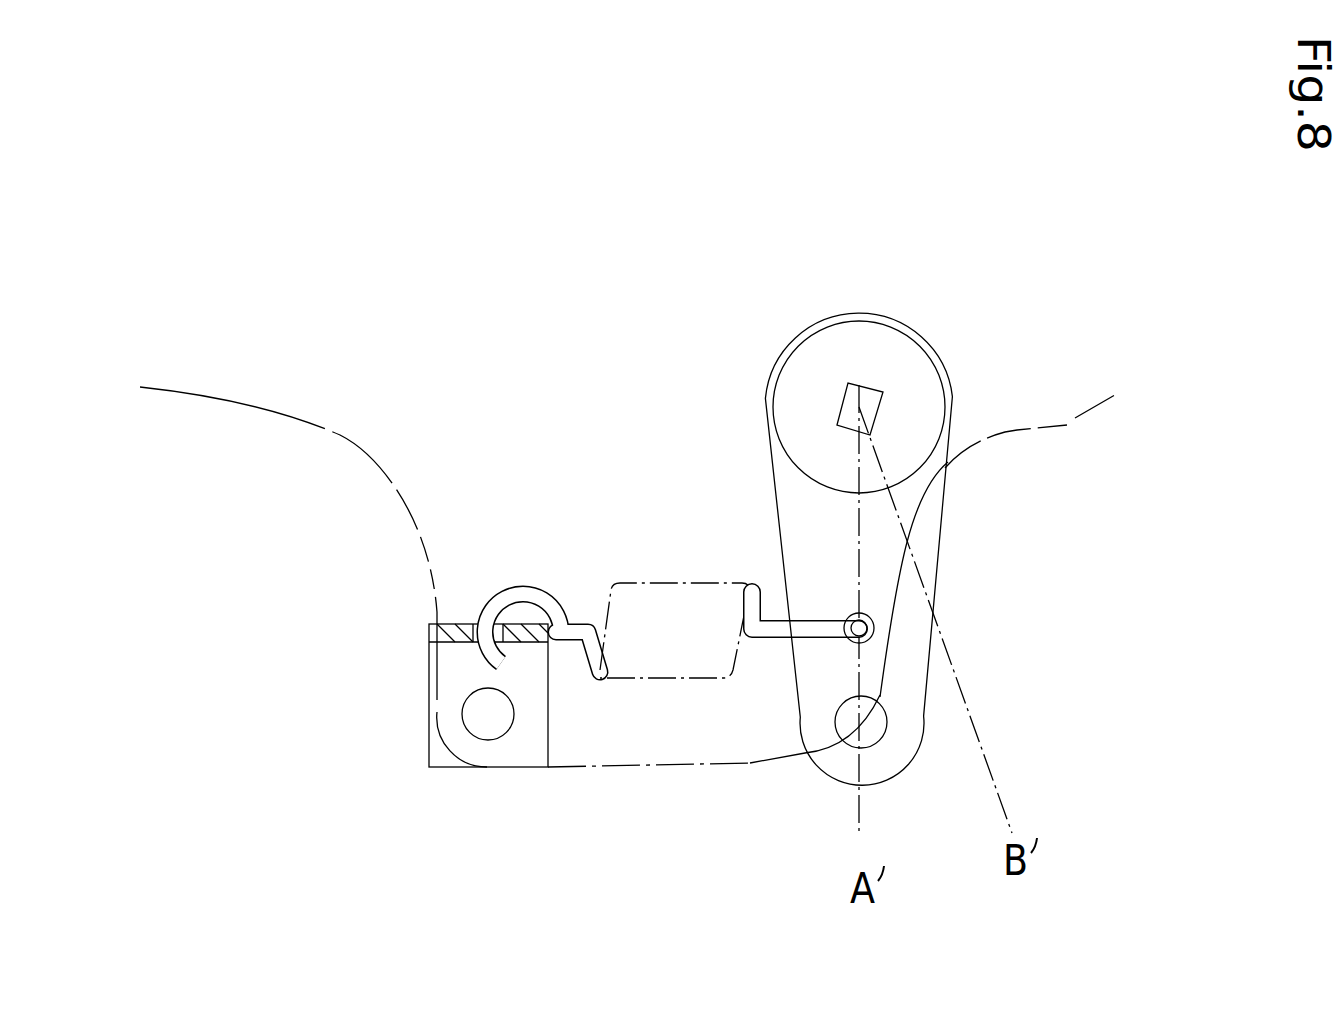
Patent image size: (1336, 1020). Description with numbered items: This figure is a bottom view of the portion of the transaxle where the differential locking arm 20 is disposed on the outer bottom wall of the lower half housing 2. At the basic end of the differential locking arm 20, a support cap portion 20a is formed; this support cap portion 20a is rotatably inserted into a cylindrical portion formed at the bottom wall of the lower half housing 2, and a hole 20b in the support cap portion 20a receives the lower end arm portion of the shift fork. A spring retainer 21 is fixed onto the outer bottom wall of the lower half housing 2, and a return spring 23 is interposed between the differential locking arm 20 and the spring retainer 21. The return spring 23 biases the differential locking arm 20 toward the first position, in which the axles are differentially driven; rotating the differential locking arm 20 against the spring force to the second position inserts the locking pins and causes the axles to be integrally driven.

The lower half housing 2 is at (657, 770).
The differential locking arm 20 is at (946, 572).
The support cap portion 20a is at (929, 378).
The hole 20b is at (848, 410).
The spring retainer 21 is at (429, 756).
The return spring 23 is at (552, 590).